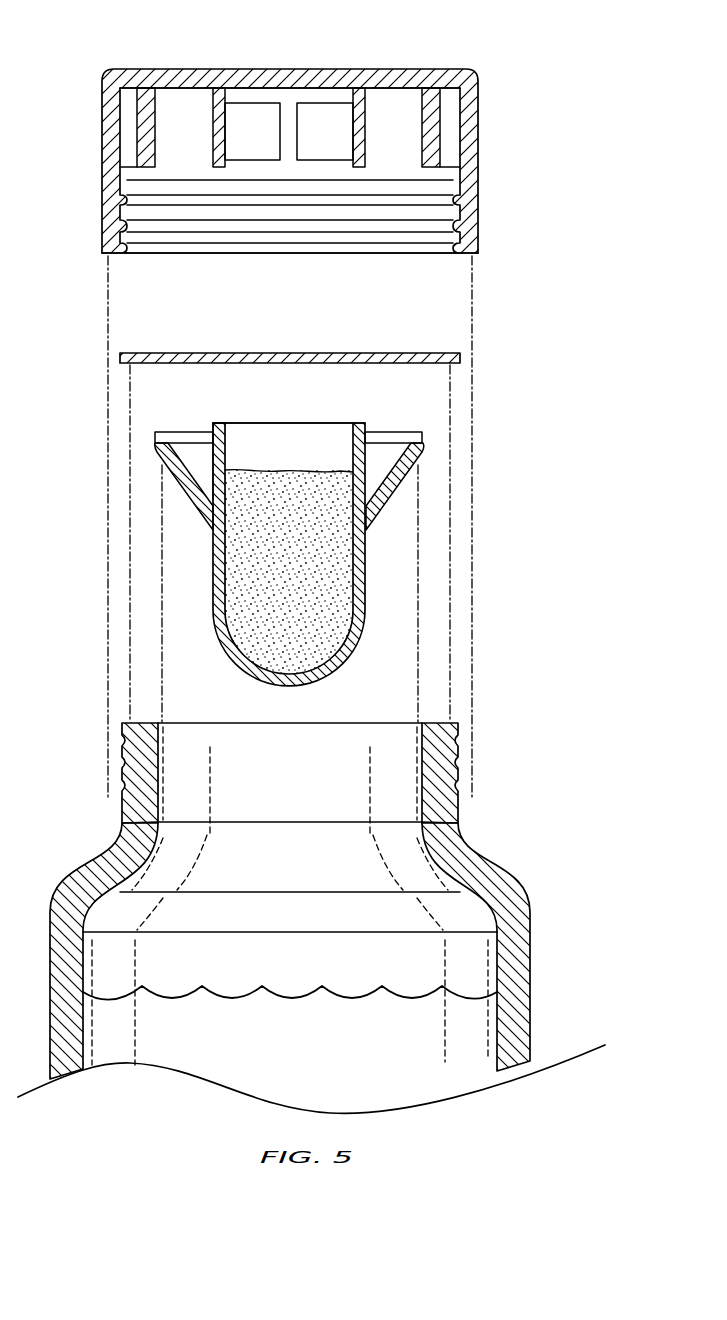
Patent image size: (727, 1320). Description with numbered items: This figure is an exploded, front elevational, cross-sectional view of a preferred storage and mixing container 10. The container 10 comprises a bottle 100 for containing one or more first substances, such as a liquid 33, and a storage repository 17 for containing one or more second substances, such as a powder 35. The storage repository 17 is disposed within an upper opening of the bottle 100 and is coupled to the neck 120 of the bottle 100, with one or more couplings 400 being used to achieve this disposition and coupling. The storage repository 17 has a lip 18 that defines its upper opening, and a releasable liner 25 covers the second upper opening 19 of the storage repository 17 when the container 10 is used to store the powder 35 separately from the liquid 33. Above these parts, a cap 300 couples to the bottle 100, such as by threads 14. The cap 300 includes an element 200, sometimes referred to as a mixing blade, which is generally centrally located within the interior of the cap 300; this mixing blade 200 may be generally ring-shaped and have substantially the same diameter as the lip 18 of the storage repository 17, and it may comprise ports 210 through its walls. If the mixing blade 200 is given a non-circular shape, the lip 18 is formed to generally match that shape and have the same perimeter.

The storage and mixing container 10 is at (513, 812).
The cap 300 is at (294, 161).
The mixing blade 200 is at (213, 125).
The ports 210 is at (330, 145).
The releasable liner 25 is at (167, 352).
The storage repository 17 is at (366, 600).
The lip 18 is at (215, 423).
The second upper opening 19 is at (292, 423).
The couplings 400 is at (158, 455).
The powder 35 is at (255, 562).
The bottle 100 is at (511, 874).
The neck 120 is at (450, 722).
The threads 14 is at (122, 752).
The liquid 33 is at (402, 997).